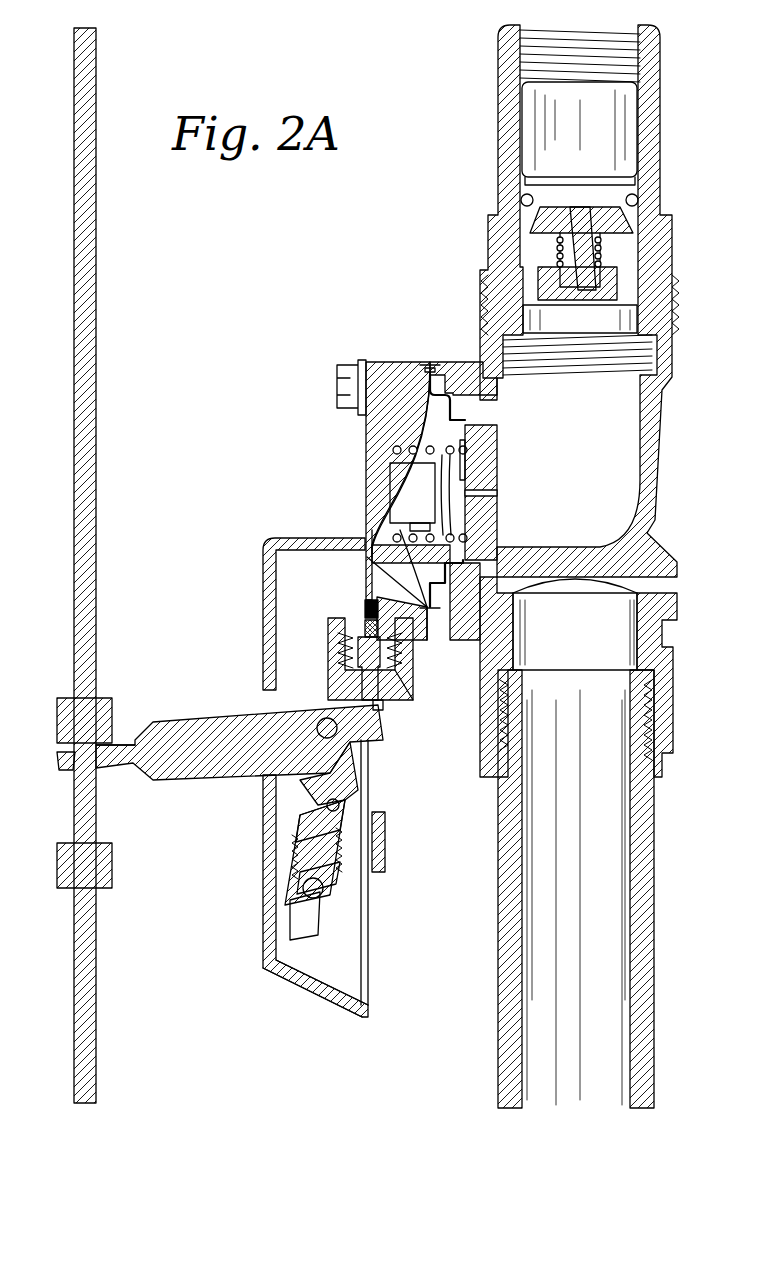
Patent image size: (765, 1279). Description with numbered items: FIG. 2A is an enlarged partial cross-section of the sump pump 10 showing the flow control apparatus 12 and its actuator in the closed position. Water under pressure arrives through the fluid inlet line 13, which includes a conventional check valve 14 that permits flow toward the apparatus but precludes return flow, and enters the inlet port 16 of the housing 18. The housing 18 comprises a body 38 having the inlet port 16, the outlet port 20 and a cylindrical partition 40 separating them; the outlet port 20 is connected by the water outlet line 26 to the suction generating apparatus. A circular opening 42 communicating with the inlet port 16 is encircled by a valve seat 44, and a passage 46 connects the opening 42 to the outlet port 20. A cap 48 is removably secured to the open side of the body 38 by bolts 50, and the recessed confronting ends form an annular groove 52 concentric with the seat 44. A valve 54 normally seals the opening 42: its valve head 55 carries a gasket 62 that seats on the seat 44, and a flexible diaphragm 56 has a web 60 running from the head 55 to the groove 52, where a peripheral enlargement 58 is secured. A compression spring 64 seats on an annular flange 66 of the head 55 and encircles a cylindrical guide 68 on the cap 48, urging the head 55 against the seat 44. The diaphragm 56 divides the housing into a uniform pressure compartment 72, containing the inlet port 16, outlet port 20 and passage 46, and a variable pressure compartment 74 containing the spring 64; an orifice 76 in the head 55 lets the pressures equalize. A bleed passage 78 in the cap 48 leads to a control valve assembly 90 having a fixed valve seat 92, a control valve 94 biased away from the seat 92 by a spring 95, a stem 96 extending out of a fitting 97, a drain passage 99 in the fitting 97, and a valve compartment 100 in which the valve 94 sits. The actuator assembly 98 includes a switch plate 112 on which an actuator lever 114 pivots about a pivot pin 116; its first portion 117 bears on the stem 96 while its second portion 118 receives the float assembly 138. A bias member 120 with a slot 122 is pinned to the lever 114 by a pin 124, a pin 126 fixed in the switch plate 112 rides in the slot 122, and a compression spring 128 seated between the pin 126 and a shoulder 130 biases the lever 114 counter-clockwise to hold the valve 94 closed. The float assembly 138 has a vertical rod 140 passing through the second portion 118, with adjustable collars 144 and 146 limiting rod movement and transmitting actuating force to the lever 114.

The sump pump 10 is at (465, 88).
The flow control apparatus 12 is at (232, 543).
The fluid inlet line 13 is at (650, 65).
The check valve 14 is at (610, 225).
The inlet port 16 is at (600, 352).
The housing 18 is at (430, 358).
The outlet port 20 is at (617, 652).
The water outlet line 26 is at (656, 848).
The body 38 is at (660, 428).
The cylindrical partition 40 is at (510, 548).
The circular opening 42 is at (498, 447).
The valve seat 44 is at (510, 545).
The passage 46 is at (520, 588).
The cap 48 is at (405, 362).
The bolt 50 is at (345, 372).
The annular groove 52 is at (437, 630).
The valve 54 is at (452, 602).
The valve head 55 is at (498, 508).
The flexible diaphragm 56 is at (448, 375).
The peripheral enlargement 58 is at (395, 380).
The web 60 is at (455, 405).
The gasket 62 is at (498, 470).
The compression spring 64 is at (380, 455).
The annular flange 66 is at (425, 500).
The cylindrical guide 68 is at (408, 485).
The uniform pressure compartment 72 is at (615, 458).
The variable pressure compartment 74 is at (400, 550).
The orifice 76 is at (490, 492).
The bleed passage 78 is at (320, 545).
The control valve assembly 90 is at (345, 612).
The fixed valve seat 92 is at (378, 610).
The control valve 94 is at (345, 628).
The spring 95 is at (338, 652).
The stem 96 is at (372, 705).
The fitting 97 is at (330, 688).
The actuator assembly 98 is at (222, 865).
The drain passage 99 is at (392, 690).
The valve compartment 100 is at (305, 655).
The switch plate 112 is at (350, 908).
The actuator lever 114 is at (218, 724).
The pivot pin 116 is at (345, 748).
The first portion 117 is at (338, 733).
The second portion 118 is at (105, 756).
The bias member 120 is at (300, 818).
The slot 122 is at (275, 950).
The pin 124 is at (340, 805).
The pin 126 is at (296, 892).
The compression spring 128 is at (298, 850).
The shoulder 130 is at (352, 845).
The float assembly 138 is at (70, 478).
The rod 140 is at (60, 782).
The adjustable collar 144 is at (62, 712).
The adjustable collar 146 is at (62, 882).